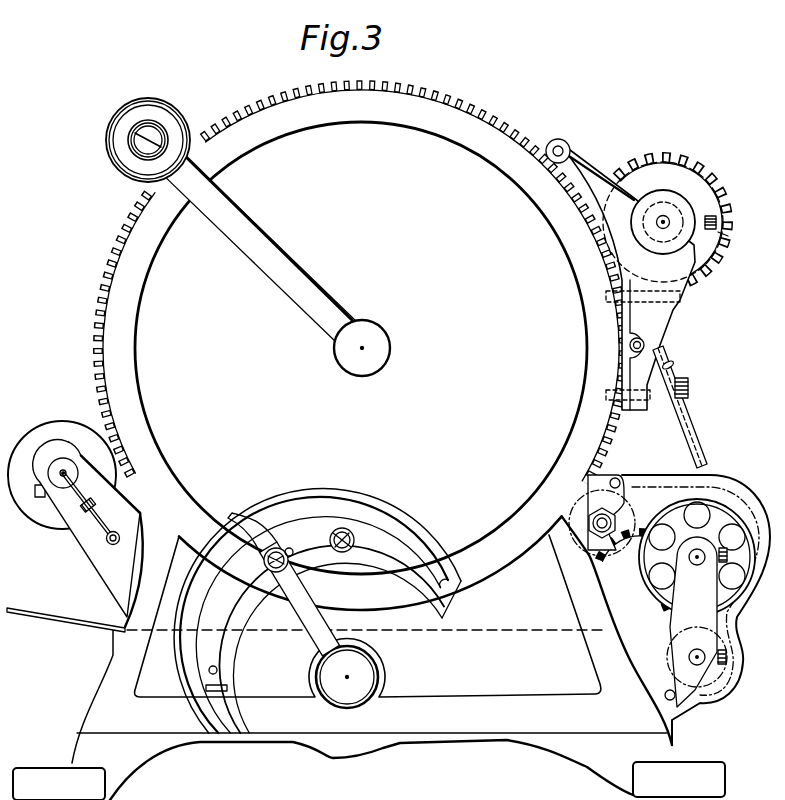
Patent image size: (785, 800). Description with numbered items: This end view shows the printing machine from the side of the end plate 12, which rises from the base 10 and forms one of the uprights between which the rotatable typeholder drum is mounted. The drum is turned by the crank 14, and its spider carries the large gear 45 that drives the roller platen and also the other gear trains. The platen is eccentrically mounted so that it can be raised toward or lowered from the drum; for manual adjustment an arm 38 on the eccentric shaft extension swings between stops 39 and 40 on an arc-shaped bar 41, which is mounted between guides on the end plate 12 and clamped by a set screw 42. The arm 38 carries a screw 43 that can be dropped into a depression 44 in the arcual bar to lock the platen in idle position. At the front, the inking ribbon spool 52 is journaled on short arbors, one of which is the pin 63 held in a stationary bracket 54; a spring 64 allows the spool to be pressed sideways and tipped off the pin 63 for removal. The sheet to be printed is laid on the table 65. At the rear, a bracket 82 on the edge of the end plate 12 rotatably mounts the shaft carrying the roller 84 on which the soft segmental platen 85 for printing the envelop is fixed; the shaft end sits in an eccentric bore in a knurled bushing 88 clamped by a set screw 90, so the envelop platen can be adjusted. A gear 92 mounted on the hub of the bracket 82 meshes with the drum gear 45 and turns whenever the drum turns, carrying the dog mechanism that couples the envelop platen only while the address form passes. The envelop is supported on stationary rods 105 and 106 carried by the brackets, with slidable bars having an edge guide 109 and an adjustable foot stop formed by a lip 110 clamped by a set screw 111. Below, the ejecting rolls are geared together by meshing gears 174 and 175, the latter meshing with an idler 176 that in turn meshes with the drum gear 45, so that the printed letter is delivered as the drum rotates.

The base 10 is at (565, 737).
The end plate 12 is at (361, 348).
The crank 14 is at (245, 230).
The arm 38 is at (313, 613).
The stop 39 is at (227, 687).
The stop 40 is at (303, 546).
The arc-shaped bar 41 is at (437, 578).
The set screw 42 is at (342, 533).
The screw 43 is at (280, 540).
The depression 44 is at (207, 671).
The gear 45 is at (450, 100).
The spool 52 is at (44, 430).
The bracket 54 is at (86, 528).
The arbor 63 is at (68, 477).
The spring 64 is at (84, 512).
The table 65 is at (68, 615).
The bracket 82 is at (626, 275).
The roller 84 is at (700, 185).
The segmental platen 85 is at (727, 235).
The bushing 88 is at (663, 222).
The set screw 90 is at (717, 220).
The gear 92 is at (660, 163).
The rod 105 is at (562, 146).
The rod 106 is at (648, 345).
The edge guide 109 is at (693, 433).
The lip 110 is at (677, 365).
The set screw 111 is at (689, 388).
The gear 174 is at (720, 677).
The gear 175 is at (643, 602).
The idler 176 is at (608, 563).